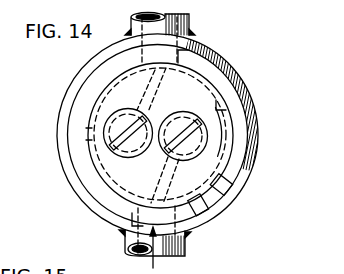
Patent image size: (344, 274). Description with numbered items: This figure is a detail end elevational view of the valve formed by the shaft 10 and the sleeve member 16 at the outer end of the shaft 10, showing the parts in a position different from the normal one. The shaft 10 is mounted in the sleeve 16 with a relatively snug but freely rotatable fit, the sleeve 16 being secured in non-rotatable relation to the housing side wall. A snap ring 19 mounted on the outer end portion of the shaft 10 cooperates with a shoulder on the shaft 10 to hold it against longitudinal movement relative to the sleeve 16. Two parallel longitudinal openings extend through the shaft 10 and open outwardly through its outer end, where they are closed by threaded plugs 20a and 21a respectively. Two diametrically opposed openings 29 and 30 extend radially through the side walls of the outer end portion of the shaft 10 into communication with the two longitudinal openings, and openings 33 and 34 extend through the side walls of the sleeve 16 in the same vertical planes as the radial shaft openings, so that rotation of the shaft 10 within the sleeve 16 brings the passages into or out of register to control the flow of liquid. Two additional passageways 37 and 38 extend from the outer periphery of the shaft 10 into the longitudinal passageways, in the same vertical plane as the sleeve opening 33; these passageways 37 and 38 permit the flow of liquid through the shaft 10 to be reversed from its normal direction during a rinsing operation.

The shaft 10 is at (209, 165).
The sleeve member 16 is at (243, 87).
The snap ring 19 is at (237, 110).
The plug 20a is at (208, 134).
The plug 21a is at (103, 134).
The radial opening 29 is at (239, 62).
The radial opening 30 is at (94, 114).
The sleeve opening 33 is at (125, 231).
The sleeve opening 34 is at (190, 45).
The passageway 37 is at (196, 216).
The passageway 38 is at (148, 78).